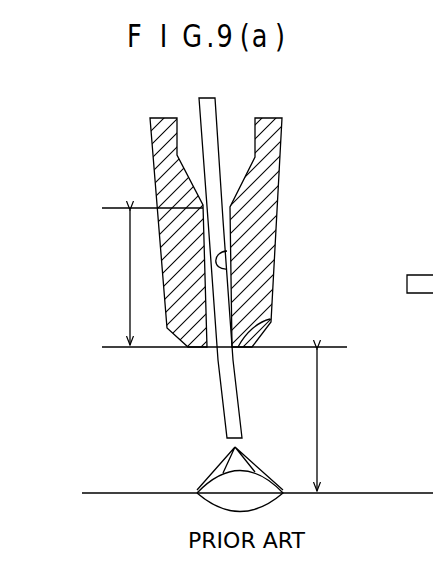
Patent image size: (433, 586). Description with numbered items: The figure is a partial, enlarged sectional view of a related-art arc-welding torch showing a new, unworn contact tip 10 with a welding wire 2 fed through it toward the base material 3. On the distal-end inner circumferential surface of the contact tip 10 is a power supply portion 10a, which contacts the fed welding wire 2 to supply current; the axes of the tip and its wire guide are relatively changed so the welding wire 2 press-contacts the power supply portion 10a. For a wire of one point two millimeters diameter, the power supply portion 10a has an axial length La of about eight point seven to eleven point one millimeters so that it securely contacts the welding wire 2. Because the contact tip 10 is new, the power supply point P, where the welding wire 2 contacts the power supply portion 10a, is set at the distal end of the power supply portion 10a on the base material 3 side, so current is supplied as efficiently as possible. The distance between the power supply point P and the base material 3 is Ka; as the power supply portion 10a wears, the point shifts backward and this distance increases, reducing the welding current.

The contact tip 10 is at (332, 152).
The power supply portion 10a is at (312, 237).
The welding wire 2 is at (223, 380).
The base material 3 is at (117, 493).
The power supply point P is at (318, 308).
The axial length of the power supply portion La is at (108, 277).
The distance between the power supply point and the base material Ka is at (336, 420).